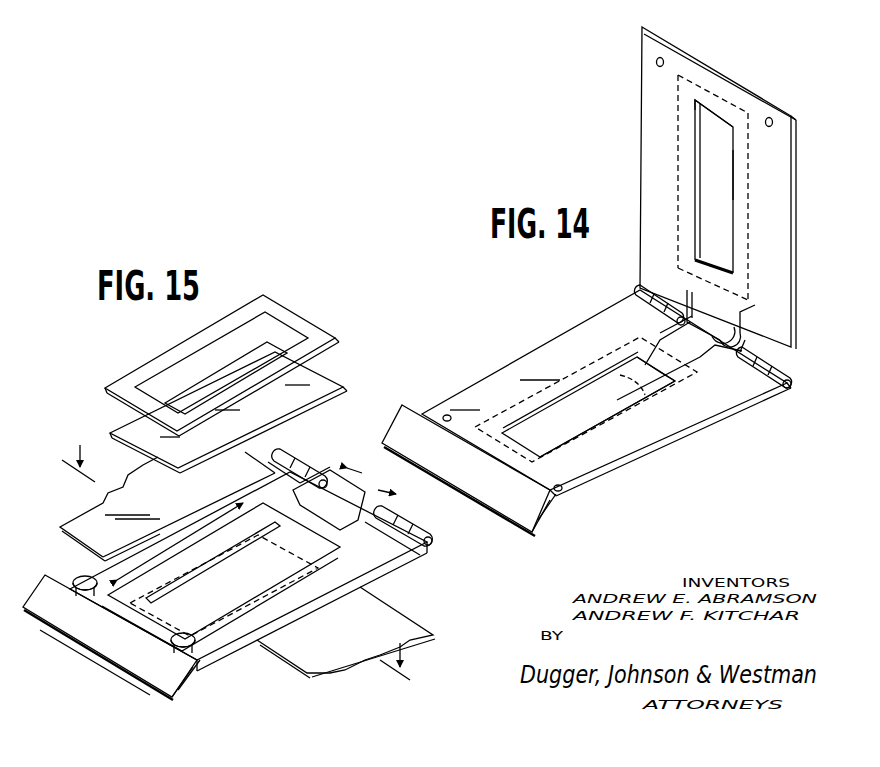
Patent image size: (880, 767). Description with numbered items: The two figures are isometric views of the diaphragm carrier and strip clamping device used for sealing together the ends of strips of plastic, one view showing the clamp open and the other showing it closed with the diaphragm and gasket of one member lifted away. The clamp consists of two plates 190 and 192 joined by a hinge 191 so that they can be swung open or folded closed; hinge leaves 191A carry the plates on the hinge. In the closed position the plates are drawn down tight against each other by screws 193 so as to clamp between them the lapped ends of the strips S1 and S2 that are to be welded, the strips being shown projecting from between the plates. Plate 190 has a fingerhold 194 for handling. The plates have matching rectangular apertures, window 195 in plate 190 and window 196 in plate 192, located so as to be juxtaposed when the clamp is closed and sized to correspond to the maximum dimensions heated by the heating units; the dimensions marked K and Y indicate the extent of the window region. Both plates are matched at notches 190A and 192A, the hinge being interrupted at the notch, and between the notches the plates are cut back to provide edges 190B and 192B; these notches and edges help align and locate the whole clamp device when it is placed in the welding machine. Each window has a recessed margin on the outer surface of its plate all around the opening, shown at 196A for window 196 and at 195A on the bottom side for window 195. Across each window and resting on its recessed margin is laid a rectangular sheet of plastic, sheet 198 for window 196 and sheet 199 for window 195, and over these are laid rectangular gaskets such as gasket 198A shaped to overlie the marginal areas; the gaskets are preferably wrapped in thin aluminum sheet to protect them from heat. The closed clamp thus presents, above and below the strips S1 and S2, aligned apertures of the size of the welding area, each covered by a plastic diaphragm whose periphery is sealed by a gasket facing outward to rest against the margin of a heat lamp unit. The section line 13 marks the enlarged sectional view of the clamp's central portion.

In FIG. 14, the plate 190 is at (606, 393).
In FIG. 15, the plate 190 is at (380, 578).
In FIG. 14, the matching notch 190A is at (660, 345).
In FIG. 14, the edge 190B is at (700, 357).
In FIG. 14, the hinge 191 is at (638, 290).
In FIG. 14, the hinge leaf 191A is at (670, 300).
In FIG. 14, the plate 192 is at (657, 203).
In FIG. 15, the plate 192 is at (193, 500).
In FIG. 14, the matching notch 192A is at (740, 314).
In FIG. 15, the matching notch 192A is at (322, 546).
In FIG. 14, the edge 192B is at (728, 338).
In FIG. 15, the edge 192B is at (328, 500).
In FIG. 15, the screws 193 is at (75, 575).
In FIG. 14, the fingerhold 194 is at (398, 427).
In FIG. 14, the rectangular aperture 195 is at (625, 420).
In FIG. 14, the recessed margin 195A is at (620, 375).
In FIG. 14, the rectangular aperture 196 is at (733, 168).
In FIG. 15, the rectangular aperture 196 is at (255, 585).
In FIG. 14, the recessed margin 196A is at (706, 120).
In FIG. 15, the recessed margin 196A is at (257, 527).
In FIG. 15, the rectangular sheet of plastic 198 is at (275, 415).
In FIG. 15, the rectangular gasket 198A is at (273, 310).
In FIG. 14, the rectangular sheet of plastic 199 is at (617, 400).
In FIG. 15, the section line 13 is at (244, 553).
In FIG. 15, the strip S1 is at (403, 627).
In FIG. 15, the strip S2 is at (88, 517).
In FIG. 15, the dimension K is at (180, 541).
In FIG. 15, the dimension Y is at (371, 481).